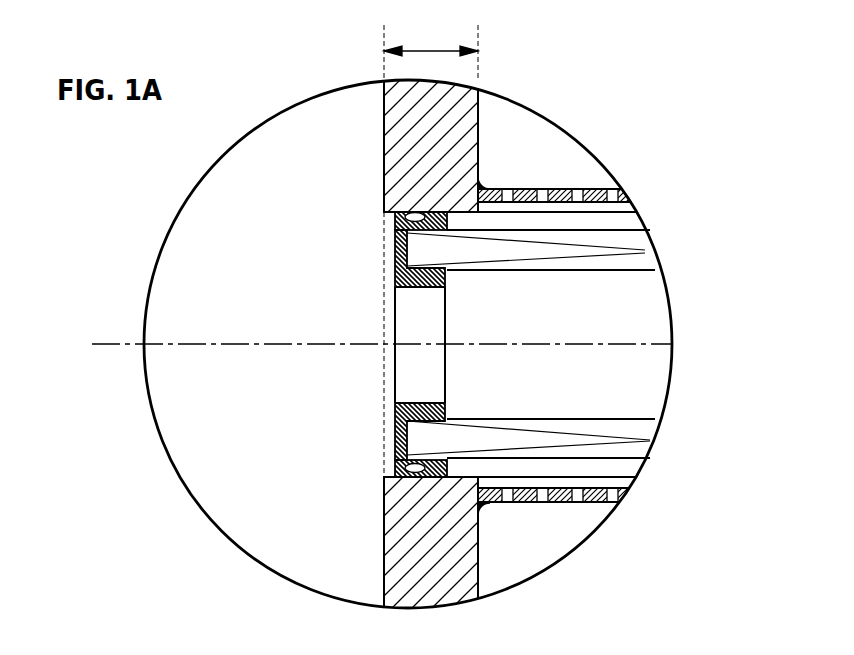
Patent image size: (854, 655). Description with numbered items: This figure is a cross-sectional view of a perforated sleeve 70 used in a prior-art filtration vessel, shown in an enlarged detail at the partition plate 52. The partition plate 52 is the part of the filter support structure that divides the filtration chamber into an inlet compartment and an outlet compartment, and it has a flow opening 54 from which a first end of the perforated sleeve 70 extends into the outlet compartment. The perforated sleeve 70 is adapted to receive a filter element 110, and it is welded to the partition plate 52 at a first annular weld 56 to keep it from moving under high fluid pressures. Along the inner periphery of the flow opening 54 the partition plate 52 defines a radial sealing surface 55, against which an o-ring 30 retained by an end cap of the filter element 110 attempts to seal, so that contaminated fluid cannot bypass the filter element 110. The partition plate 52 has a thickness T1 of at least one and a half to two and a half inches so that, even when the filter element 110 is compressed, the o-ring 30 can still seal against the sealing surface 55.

The thickness T1 is at (421, 48).
The partition plate 52 is at (405, 140).
The o-ring 30 is at (415, 212).
The flow opening 54 is at (397, 475).
The radial sealing surface 55 is at (452, 475).
The first annular weld 56 is at (485, 178).
The perforated sleeve 70 is at (562, 187).
The filter element 110 is at (608, 232).